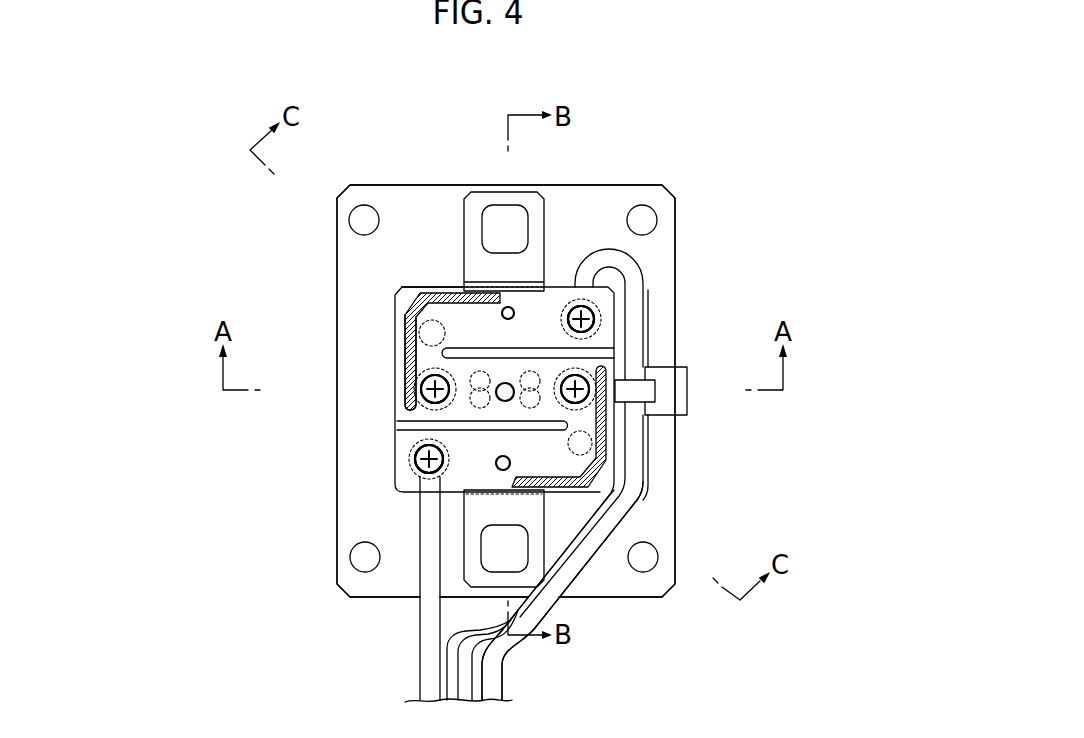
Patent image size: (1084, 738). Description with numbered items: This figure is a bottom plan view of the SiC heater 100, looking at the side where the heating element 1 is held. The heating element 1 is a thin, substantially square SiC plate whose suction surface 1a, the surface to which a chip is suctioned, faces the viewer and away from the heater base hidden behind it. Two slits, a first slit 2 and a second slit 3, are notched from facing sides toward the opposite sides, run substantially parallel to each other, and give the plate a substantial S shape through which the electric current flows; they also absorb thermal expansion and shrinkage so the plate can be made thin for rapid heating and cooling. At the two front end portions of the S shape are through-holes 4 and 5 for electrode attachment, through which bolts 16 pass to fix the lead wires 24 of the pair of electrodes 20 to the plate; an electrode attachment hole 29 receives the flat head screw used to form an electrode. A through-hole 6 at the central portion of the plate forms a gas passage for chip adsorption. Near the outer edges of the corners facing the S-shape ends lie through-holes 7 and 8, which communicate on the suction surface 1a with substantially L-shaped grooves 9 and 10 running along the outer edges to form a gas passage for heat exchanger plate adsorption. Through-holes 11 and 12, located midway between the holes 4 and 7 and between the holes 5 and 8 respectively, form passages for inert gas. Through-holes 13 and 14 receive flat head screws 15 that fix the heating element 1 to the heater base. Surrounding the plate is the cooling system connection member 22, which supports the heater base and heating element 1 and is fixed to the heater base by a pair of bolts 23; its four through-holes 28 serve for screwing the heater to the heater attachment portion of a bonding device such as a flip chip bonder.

The SiC heater 100 is at (600, 112).
The heating element 1 is at (426, 276).
The suction surface 1a is at (450, 308).
The first slit 2 is at (617, 376).
The second slit 3 is at (397, 424).
The through-hole for electrode attachment 4 is at (594, 312).
The through-hole for electrode attachment 5 is at (420, 466).
The through-hole 6 is at (514, 396).
The through-hole 7 is at (410, 306).
The through-hole 8 is at (592, 478).
The groove 9 is at (415, 335).
The groove 10 is at (573, 487).
The through-hole 11 is at (512, 308).
The through-hole 12 is at (496, 467).
The through-hole 13 is at (421, 389).
The through-hole 14 is at (589, 386).
The flat head screw 15 is at (505, 389).
The bolt 16 is at (504, 389).
The electrode 20 is at (581, 296).
The cooling system connection member 22 is at (633, 198).
The bolt 23 is at (497, 213).
The lead wire 24 is at (421, 672).
The through-hole 28 is at (358, 219).
The electrode attachment hole 29 is at (408, 462).